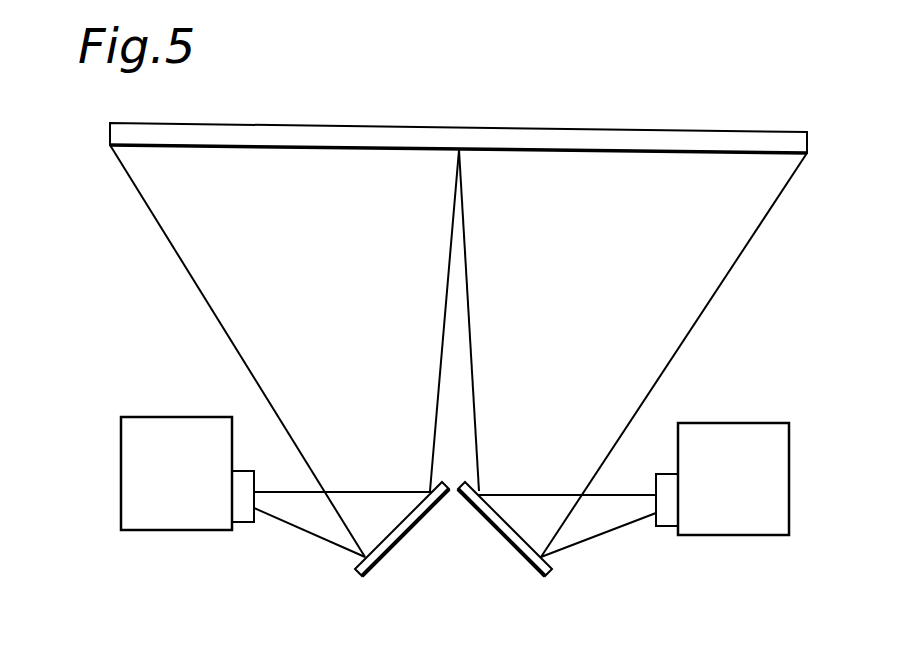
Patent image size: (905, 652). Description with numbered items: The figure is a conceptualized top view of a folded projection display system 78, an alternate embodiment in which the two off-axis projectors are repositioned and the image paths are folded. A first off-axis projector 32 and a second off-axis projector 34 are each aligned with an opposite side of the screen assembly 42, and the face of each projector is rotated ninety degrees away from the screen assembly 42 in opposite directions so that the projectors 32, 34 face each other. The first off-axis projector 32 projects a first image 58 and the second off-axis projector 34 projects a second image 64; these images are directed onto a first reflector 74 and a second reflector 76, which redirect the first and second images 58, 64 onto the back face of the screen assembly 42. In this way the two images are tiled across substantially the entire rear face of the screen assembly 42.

The screen assembly 42 is at (327, 124).
The folded projection display system 78 is at (118, 224).
The first image 58 is at (381, 309).
The second image 64 is at (581, 309).
The first off-axis projector 32 is at (195, 490).
The second off-axis projector 34 is at (752, 495).
The first reflector 74 is at (402, 535).
The second reflector 76 is at (528, 555).